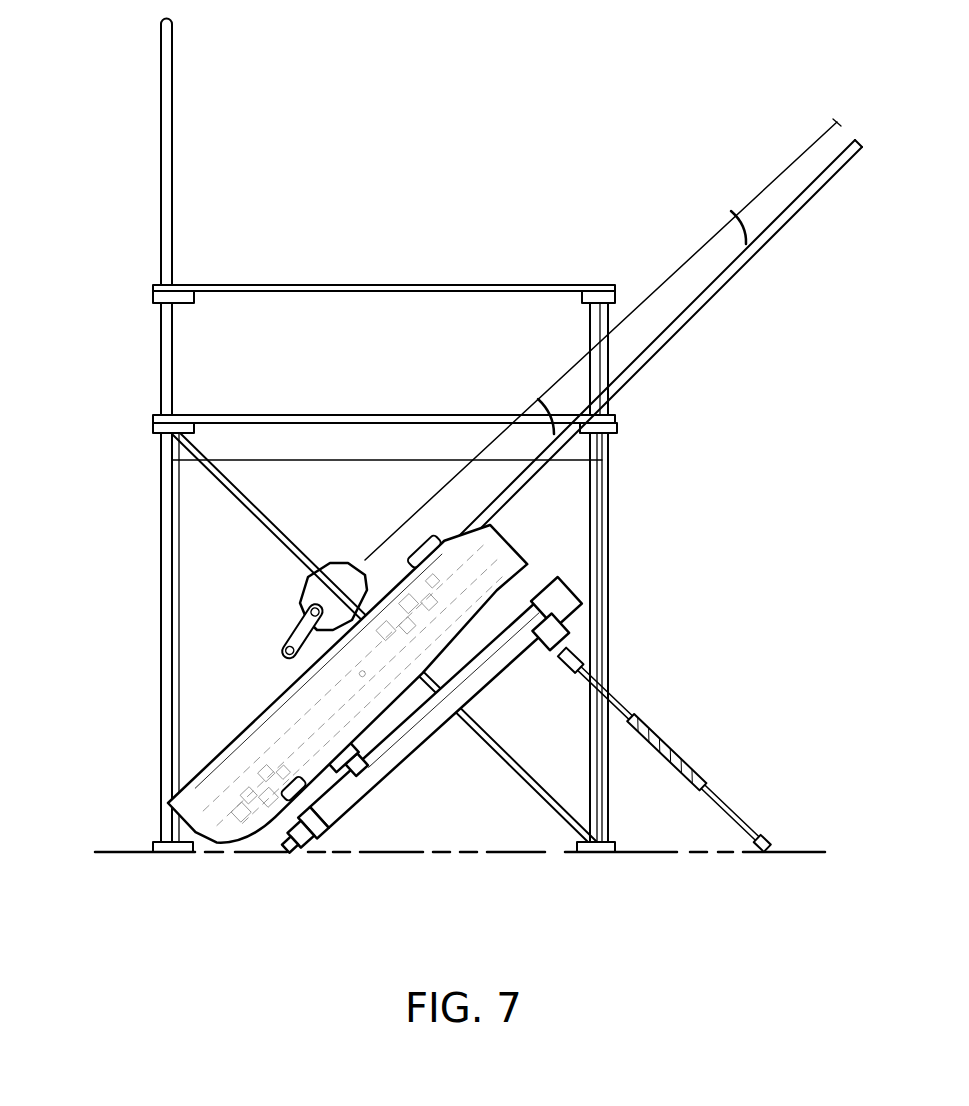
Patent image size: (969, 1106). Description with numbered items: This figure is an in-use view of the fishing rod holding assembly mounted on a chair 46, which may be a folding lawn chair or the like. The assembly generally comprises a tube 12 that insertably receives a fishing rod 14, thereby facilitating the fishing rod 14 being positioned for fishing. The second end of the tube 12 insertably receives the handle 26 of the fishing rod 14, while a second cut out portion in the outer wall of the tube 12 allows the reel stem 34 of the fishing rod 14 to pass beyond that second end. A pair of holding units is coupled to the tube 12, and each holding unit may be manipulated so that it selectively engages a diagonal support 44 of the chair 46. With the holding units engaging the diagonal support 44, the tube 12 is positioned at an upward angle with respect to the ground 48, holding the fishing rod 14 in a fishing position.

The tube 12 is at (317, 645).
The fishing rod 14 is at (693, 300).
The handle 26 is at (300, 662).
The reel stem 34 is at (268, 662).
The diagonal support 44 is at (252, 752).
The chair 46 is at (122, 350).
The ground 48 is at (788, 850).